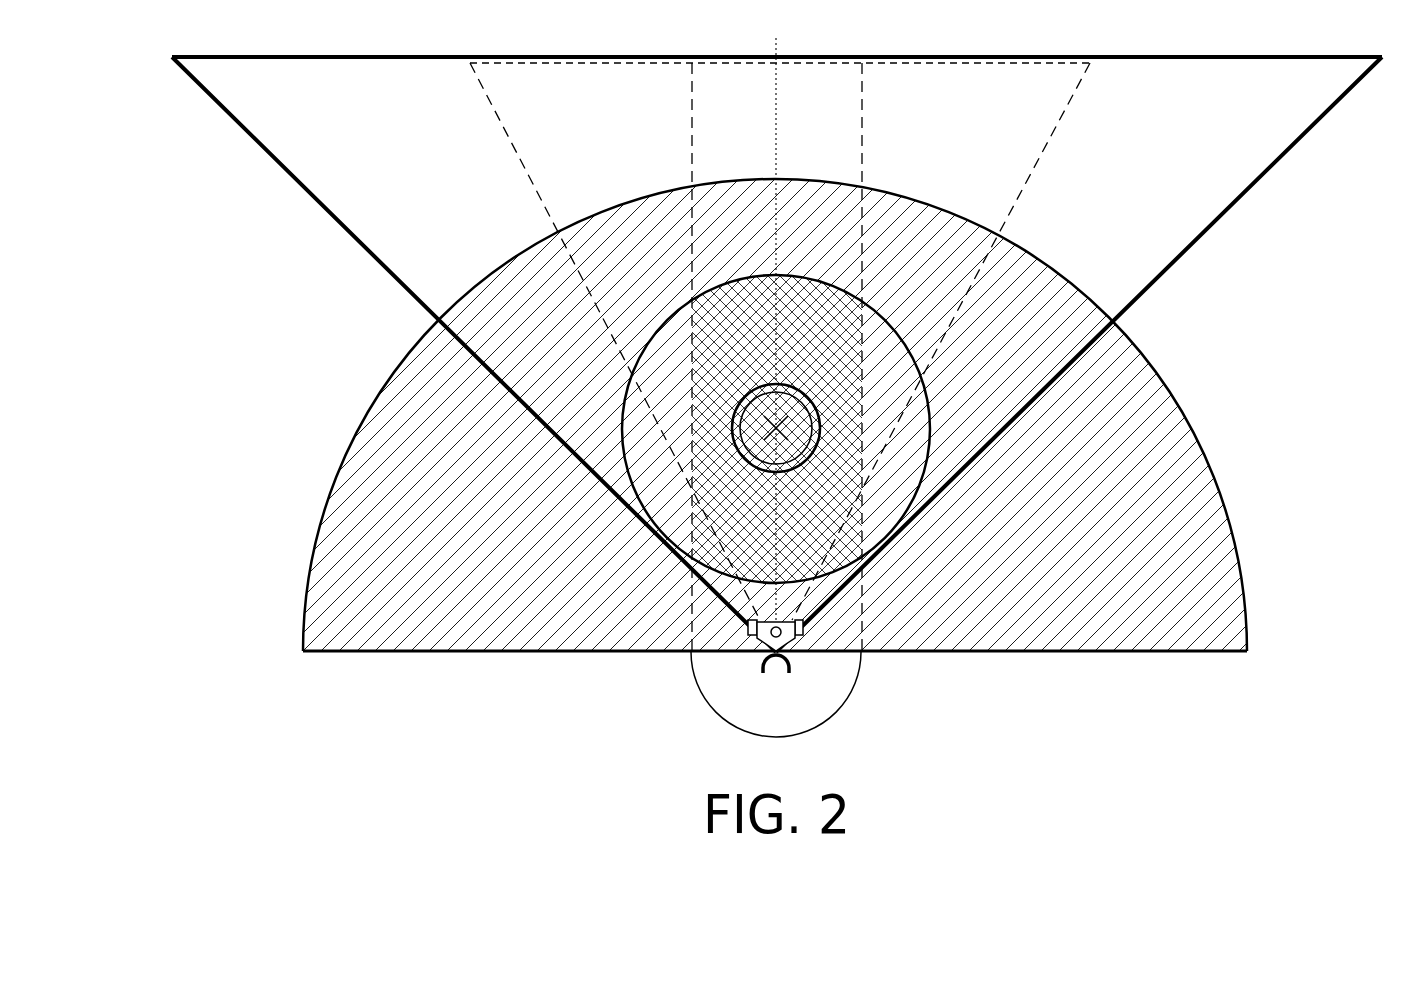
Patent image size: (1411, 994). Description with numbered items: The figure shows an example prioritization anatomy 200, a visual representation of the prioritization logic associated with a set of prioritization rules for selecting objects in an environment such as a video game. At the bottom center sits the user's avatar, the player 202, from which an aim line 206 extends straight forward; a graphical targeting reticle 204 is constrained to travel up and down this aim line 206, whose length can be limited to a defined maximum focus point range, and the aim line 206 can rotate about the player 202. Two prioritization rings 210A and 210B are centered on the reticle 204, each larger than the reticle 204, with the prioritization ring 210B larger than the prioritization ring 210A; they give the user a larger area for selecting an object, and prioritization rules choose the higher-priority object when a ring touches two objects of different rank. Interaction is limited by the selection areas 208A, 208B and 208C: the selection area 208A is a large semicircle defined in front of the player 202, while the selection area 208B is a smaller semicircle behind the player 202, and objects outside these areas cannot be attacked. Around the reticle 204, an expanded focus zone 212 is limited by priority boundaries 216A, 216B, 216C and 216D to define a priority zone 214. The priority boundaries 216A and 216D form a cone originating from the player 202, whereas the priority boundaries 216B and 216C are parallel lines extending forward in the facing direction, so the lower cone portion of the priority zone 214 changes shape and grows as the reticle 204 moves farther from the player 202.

The prioritization anatomy 200 is at (91, 189).
The player 202 is at (797, 670).
The reticle 204 is at (787, 453).
The aim line 206 is at (782, 548).
The selection area 208A is at (1167, 380).
The selection area 208B is at (696, 680).
The selection area 208C is at (1212, 226).
The prioritization ring 210A is at (748, 393).
The prioritization ring 210B is at (742, 452).
The expanded focus zone 212 is at (888, 311).
The priority zone 214 is at (752, 350).
The priority boundary 216A is at (517, 153).
The priority boundary 216B is at (690, 123).
The priority boundary 216C is at (862, 135).
The priority boundary 216D is at (1048, 145).